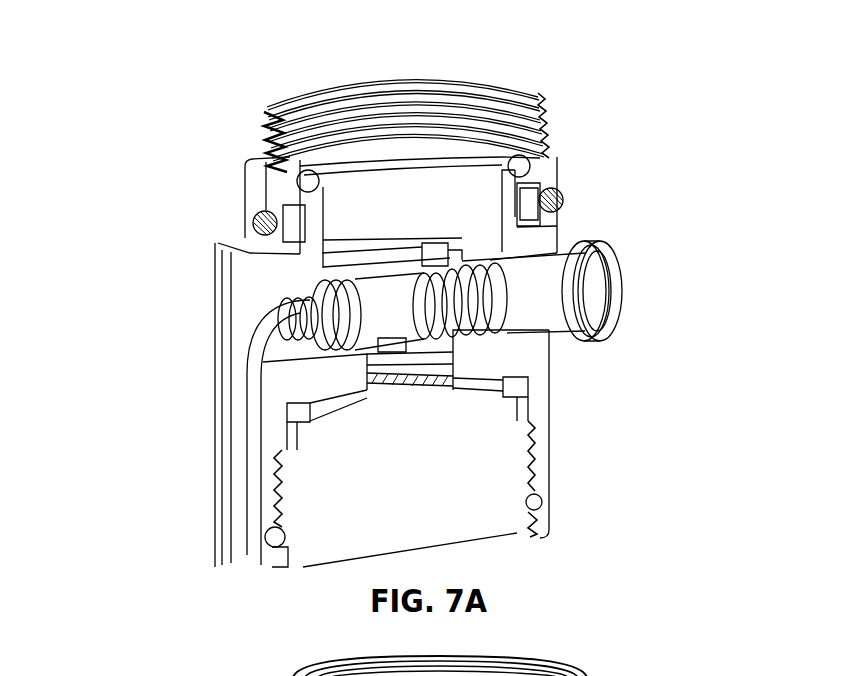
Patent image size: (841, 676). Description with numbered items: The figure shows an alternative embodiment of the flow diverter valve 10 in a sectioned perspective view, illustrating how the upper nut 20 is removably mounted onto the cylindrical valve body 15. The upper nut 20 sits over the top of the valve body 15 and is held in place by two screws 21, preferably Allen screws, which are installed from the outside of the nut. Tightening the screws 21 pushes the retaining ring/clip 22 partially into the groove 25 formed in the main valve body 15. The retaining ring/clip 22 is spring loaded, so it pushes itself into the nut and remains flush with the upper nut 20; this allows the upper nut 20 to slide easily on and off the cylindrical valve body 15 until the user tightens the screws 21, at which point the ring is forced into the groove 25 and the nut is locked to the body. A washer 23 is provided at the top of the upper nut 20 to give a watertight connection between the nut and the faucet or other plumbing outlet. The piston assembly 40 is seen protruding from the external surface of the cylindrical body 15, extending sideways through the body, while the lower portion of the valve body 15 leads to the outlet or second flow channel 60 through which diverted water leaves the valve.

The valve assembly 10 is at (175, 335).
The cylindrical valve body 15 is at (235, 418).
The upper nut 20 is at (253, 193).
The screws 21 is at (265, 232).
The retaining ring/clip 22 is at (535, 187).
The washer 23 is at (397, 145).
The groove 25 is at (305, 218).
The piston assembly 40 is at (612, 282).
The second flow channel 60 is at (255, 557).